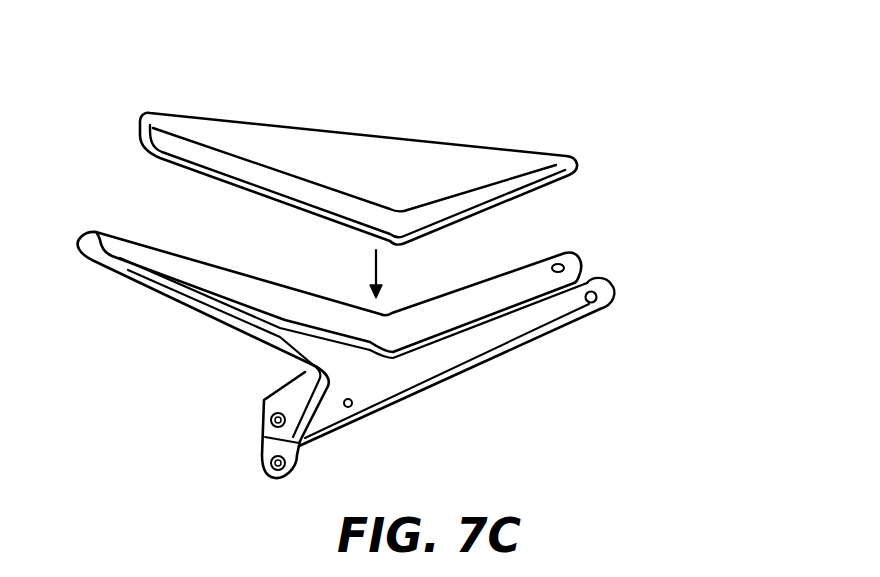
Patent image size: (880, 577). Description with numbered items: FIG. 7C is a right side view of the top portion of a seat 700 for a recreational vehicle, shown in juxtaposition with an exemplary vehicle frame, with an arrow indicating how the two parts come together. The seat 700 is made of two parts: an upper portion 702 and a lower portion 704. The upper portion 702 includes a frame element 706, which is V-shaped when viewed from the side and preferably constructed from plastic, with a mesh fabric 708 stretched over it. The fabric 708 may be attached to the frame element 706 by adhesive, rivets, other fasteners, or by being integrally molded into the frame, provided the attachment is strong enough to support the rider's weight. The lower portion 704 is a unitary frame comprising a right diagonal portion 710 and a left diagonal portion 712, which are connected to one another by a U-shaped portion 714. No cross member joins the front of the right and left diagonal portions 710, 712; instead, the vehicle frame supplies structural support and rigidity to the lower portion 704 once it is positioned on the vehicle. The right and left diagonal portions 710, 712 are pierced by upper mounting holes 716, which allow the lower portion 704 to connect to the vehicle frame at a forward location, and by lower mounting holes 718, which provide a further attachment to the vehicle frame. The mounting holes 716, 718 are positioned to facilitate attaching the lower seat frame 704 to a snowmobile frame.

The seat 700 is at (651, 191).
The upper portion 702 is at (465, 141).
The lower portion 704 is at (541, 344).
The frame element 706 is at (523, 193).
The mesh fabric 708 is at (186, 122).
The right diagonal portion 710 is at (398, 391).
The left diagonal portion 712 is at (296, 388).
The U-shaped portion 714 is at (103, 258).
The upper mounting holes 716 is at (562, 268).
The lower mounting holes 718 is at (593, 300).